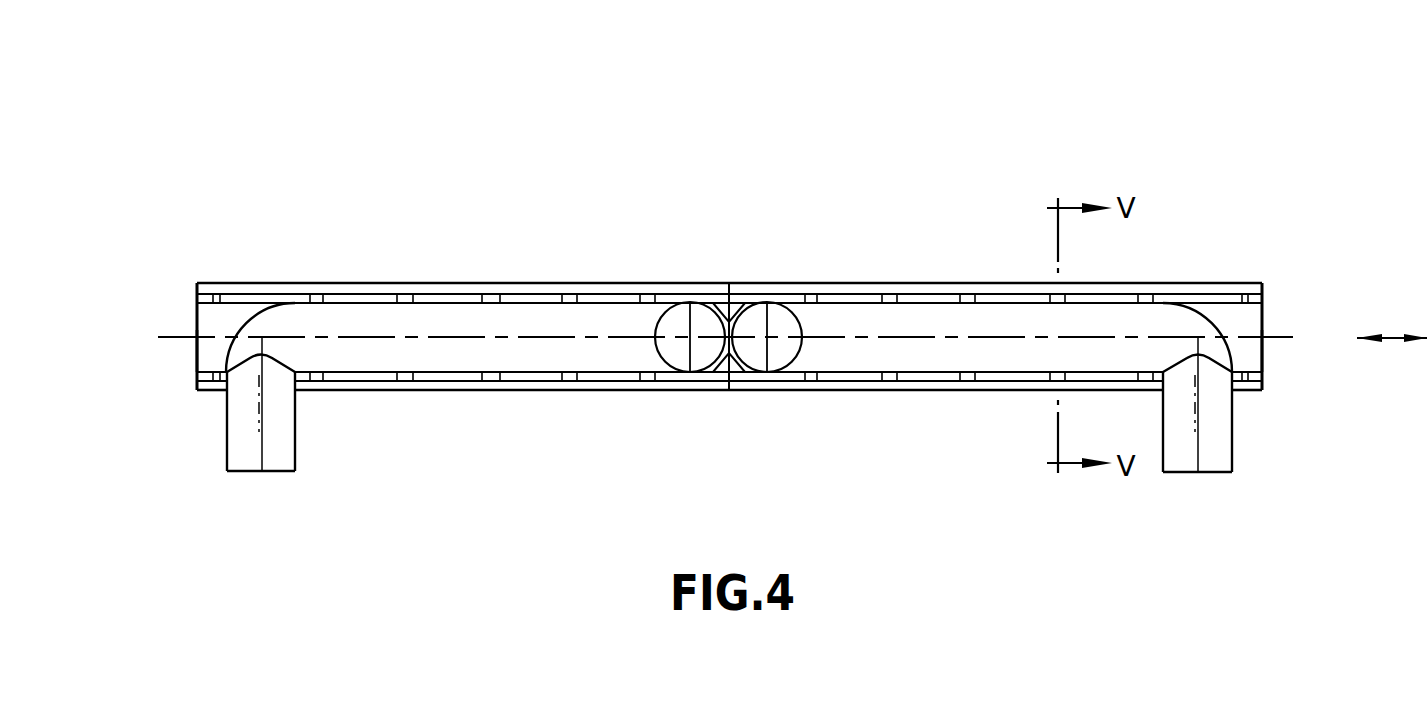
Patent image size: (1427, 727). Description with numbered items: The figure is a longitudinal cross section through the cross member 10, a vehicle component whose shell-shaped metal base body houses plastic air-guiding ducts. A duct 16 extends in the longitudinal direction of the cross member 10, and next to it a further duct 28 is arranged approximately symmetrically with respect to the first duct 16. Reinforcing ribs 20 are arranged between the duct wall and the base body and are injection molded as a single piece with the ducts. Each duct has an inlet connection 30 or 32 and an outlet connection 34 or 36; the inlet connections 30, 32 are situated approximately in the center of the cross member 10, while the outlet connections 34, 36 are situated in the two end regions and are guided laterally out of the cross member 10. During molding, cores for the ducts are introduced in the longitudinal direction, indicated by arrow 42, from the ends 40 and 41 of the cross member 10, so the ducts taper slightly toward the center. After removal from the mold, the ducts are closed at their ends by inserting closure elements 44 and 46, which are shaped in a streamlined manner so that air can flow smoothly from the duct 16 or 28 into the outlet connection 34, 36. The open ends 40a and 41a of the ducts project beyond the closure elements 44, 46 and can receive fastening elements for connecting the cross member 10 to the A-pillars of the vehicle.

The cross member 10 is at (546, 140).
The duct 16 is at (1140, 318).
The reinforcing ribs 20 is at (812, 295).
The further duct 28 is at (358, 312).
The inlet connection 30 is at (748, 368).
The inlet connection 32 is at (656, 357).
The outlet connection 34 is at (1223, 448).
The outlet connection 36 is at (272, 463).
The end 40 is at (1263, 313).
The open end 40a is at (1250, 342).
The end 41 is at (197, 315).
The open end 41a is at (210, 343).
The arrow 42 is at (1395, 338).
The closure element 44 is at (1215, 318).
The closure element 46 is at (247, 322).